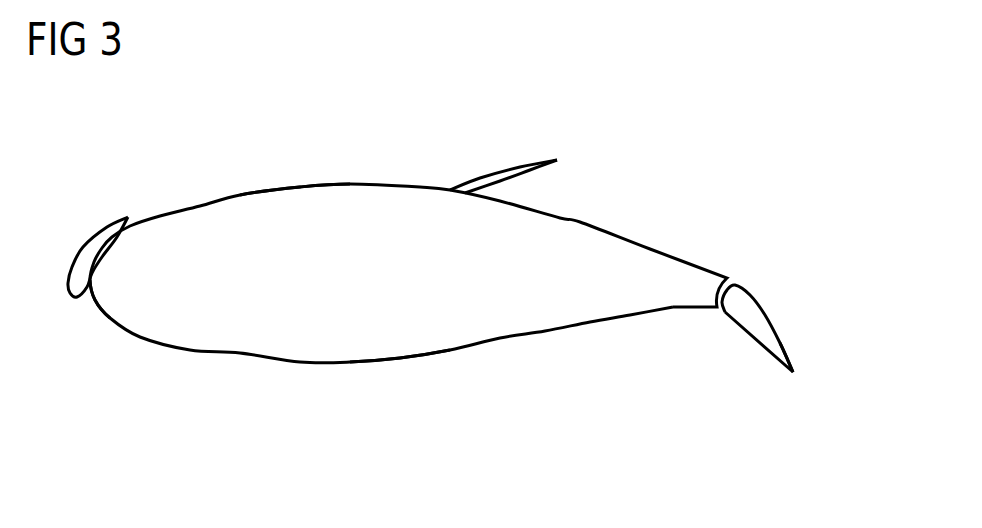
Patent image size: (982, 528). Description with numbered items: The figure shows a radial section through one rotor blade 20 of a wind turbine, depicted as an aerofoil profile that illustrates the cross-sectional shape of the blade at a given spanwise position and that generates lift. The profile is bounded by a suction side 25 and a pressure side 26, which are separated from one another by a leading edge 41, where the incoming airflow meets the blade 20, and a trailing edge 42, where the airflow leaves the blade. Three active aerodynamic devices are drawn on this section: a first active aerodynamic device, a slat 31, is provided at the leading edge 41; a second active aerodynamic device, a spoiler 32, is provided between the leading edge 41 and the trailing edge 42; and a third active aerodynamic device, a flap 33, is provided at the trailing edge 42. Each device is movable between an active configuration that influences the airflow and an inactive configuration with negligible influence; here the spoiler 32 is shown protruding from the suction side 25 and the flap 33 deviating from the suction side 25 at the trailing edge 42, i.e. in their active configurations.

The rotor blade 20 is at (605, 243).
The suction side 25 is at (285, 188).
The pressure side 26 is at (407, 362).
The slat 31 is at (82, 243).
The spoiler 32 is at (498, 168).
The flap 33 is at (770, 312).
The leading edge 41 is at (102, 308).
The trailing edge 42 is at (795, 373).